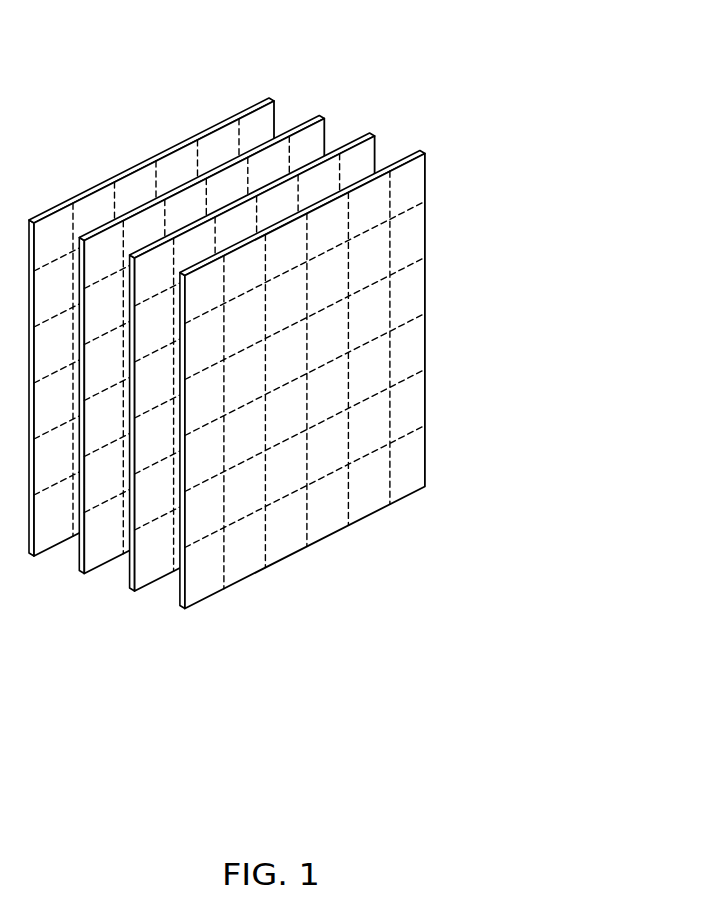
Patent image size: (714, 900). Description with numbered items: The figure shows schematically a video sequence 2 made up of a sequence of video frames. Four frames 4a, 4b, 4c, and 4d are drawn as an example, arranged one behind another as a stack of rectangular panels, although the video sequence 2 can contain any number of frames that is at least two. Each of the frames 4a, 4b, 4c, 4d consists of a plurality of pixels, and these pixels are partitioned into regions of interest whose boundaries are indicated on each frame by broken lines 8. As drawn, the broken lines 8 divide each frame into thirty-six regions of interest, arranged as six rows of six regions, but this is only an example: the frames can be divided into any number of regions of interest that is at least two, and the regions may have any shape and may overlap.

The video sequence 2 is at (325, 313).
The video frame 4a is at (137, 168).
The video frame 4b is at (312, 123).
The video frame 4c is at (368, 138).
The video frame 4d is at (365, 380).
The broken lines 8 is at (393, 273).